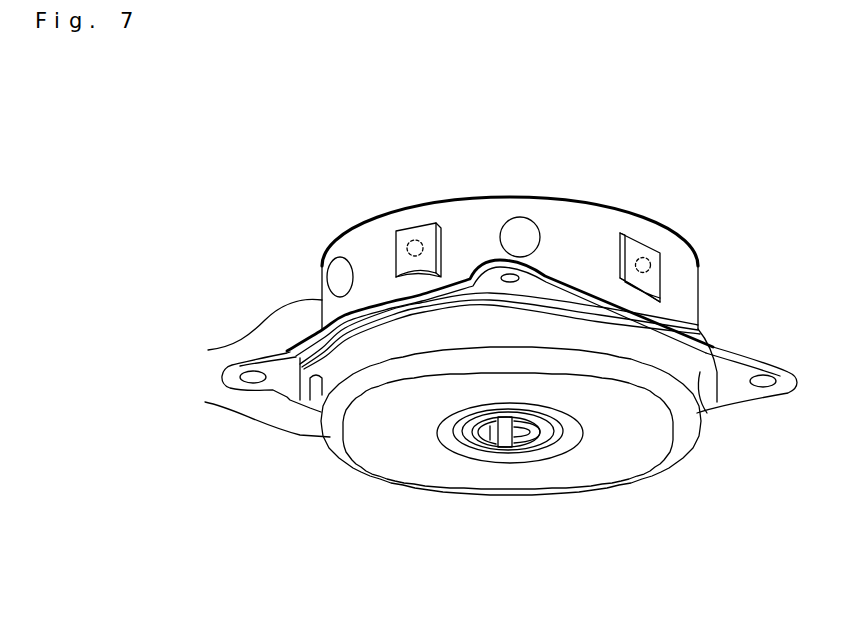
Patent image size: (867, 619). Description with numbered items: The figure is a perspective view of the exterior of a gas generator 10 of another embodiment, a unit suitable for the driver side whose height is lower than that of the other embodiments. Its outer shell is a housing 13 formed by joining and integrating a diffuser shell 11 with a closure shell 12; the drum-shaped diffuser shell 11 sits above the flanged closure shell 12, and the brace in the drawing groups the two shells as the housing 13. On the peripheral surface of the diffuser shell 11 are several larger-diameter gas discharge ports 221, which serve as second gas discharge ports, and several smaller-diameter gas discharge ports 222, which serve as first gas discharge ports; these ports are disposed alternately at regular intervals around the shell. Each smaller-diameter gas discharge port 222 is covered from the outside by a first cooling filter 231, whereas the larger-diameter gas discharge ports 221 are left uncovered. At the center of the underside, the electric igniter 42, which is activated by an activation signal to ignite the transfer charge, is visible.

The gas generator 10 is at (584, 172).
The diffuser shell 11 is at (212, 350).
The closure shell 12 is at (252, 412).
The housing 13 is at (458, 348).
The electric igniter 42 is at (508, 443).
The larger-diameter gas discharge port 221 is at (338, 273).
The smaller-diameter gas discharge port 222 is at (415, 243).
The first cooling filter 231 is at (397, 238).